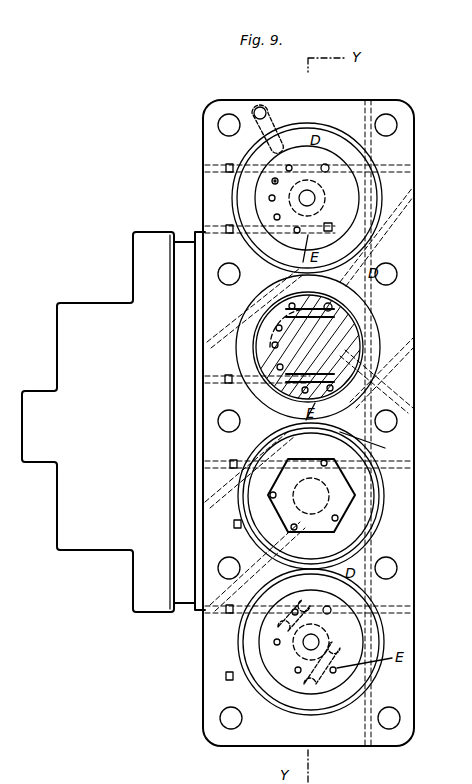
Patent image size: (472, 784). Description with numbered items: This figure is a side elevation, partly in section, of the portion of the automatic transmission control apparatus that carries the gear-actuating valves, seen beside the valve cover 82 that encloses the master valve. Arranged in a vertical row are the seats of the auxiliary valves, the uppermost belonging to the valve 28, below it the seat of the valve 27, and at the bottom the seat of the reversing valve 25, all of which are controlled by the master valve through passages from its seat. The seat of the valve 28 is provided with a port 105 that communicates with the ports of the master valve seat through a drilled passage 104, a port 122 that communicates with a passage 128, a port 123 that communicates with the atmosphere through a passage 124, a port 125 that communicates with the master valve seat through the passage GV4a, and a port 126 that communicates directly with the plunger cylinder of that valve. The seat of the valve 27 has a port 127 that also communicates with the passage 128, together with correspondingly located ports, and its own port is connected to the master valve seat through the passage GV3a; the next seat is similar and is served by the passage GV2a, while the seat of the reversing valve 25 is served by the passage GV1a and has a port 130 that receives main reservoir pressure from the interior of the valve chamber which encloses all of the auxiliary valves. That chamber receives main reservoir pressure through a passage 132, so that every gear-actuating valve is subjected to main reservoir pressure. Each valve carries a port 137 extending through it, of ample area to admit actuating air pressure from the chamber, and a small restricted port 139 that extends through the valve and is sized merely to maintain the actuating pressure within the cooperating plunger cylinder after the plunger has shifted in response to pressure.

The valve cover 82 is at (113, 422).
The drilled passage 104 is at (228, 168).
The port 105 is at (289, 166).
The port 122 is at (339, 141).
The port 123 is at (338, 218).
The passage 124 is at (192, 335).
The port 125 is at (252, 242).
The port 126 is at (220, 198).
The port 127 is at (298, 296).
The passage 128 is at (308, 423).
The port 130 is at (293, 612).
The passage 132 is at (277, 143).
The port 137 is at (278, 366).
The small or restricted port 139 is at (278, 326).
The reversing valve 25 is at (311, 642).
The auxiliary valve 27 is at (354, 382).
The auxiliary valve 28 is at (307, 198).
The passage GV1a is at (229, 678).
The passage GV2a is at (233, 526).
The passage GV3a is at (228, 383).
The passage GV4a is at (228, 229).